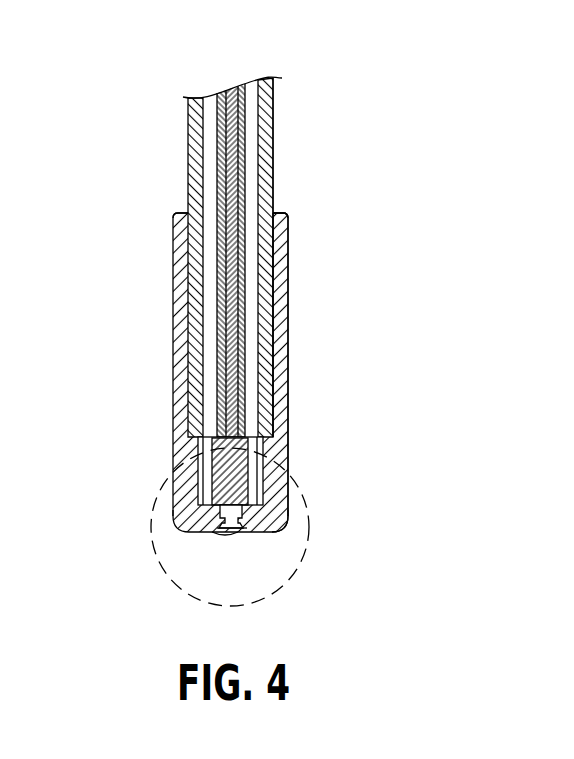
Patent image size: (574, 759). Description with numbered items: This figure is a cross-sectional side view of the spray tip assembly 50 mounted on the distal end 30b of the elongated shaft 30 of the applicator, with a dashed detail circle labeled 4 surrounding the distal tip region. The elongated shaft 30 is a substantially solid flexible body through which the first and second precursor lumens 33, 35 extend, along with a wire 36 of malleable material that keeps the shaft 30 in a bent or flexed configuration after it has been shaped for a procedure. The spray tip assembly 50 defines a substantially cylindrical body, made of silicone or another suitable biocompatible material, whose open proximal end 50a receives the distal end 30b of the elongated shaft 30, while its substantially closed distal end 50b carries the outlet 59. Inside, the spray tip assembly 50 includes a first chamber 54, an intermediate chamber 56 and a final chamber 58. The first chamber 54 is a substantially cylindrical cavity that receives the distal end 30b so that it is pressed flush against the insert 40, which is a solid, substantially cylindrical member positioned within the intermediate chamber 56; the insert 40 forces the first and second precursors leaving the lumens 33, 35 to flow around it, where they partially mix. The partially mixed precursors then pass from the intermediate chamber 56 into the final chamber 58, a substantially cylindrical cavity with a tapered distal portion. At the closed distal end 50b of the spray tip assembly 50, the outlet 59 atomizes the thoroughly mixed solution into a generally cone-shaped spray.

The elongated shaft 30 is at (313, 113).
The distal end of elongated shaft 30b is at (275, 168).
The wire 36 is at (228, 137).
The first precursor lumen 33 is at (210, 265).
The second precursor lumen 35 is at (253, 255).
The spray tip assembly 50 is at (327, 315).
The housing top end 50a is at (287, 214).
The housing bottom end 50b is at (180, 530).
The first chamber 54 is at (275, 368).
The insert 40 is at (200, 447).
The intermediate chamber 56 is at (258, 446).
The final chamber 58 is at (222, 531).
The outlet 59 is at (237, 540).
The detail callout circle 4 is at (162, 487).